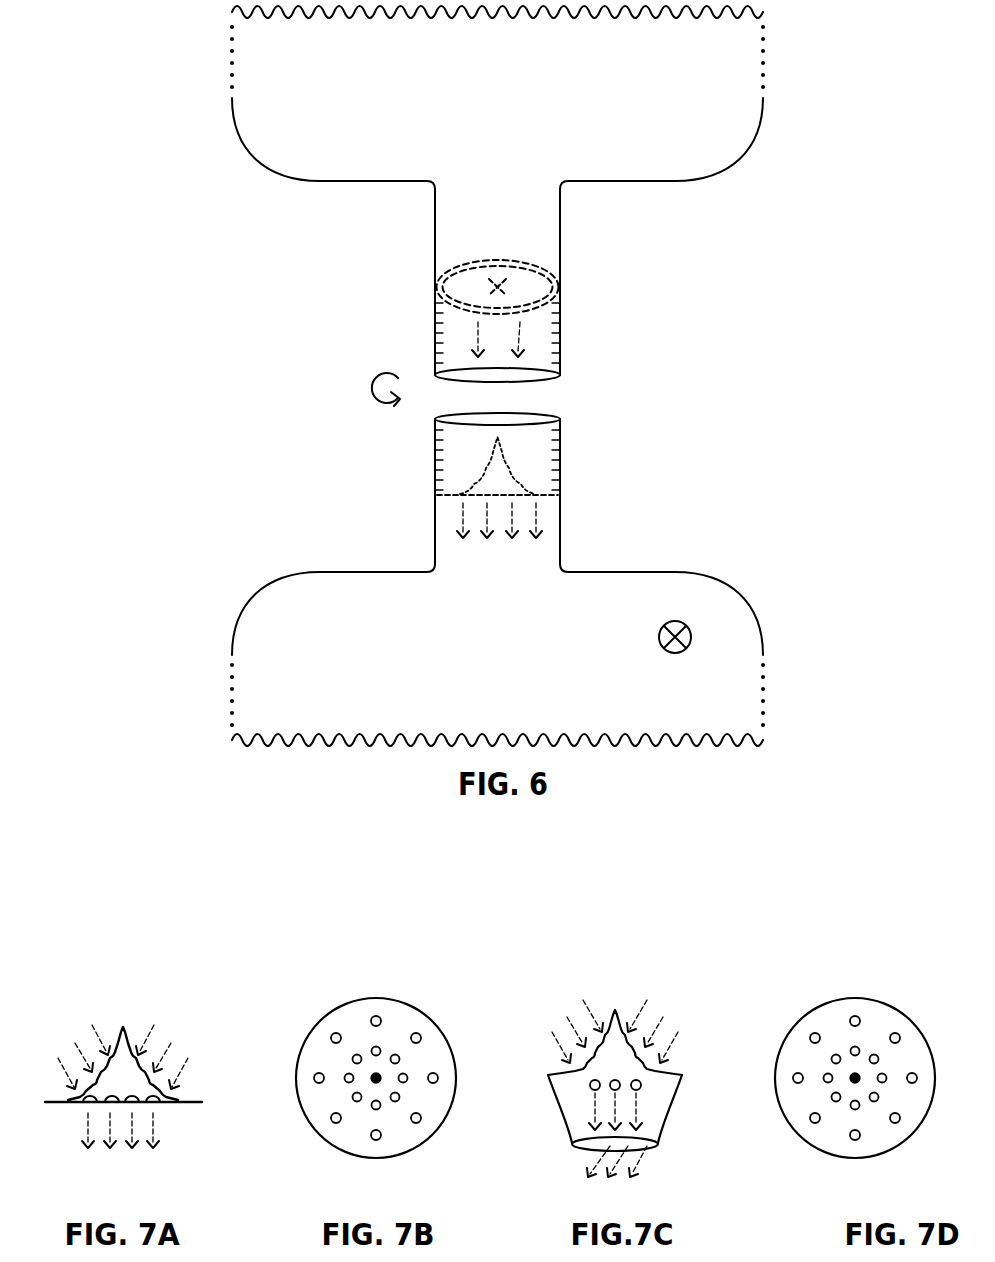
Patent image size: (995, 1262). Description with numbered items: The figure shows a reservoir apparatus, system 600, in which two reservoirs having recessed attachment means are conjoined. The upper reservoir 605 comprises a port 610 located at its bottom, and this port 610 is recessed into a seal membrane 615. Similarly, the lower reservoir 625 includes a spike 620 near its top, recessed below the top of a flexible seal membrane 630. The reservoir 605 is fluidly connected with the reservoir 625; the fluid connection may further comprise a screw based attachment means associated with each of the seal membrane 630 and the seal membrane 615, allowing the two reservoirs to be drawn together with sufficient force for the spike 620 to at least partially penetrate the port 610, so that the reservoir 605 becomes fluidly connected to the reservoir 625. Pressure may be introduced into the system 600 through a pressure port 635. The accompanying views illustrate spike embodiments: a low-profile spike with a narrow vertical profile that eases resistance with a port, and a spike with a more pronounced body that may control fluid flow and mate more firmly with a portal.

The system 600 is at (145, 243).
The reservoir 605 is at (478, 106).
The port 610 is at (442, 276).
The seal membrane 615 is at (437, 334).
The spike 620 is at (470, 489).
The reservoir 625 is at (478, 691).
The flexible seal membrane 630 is at (437, 448).
The pressure port 635 is at (686, 624).